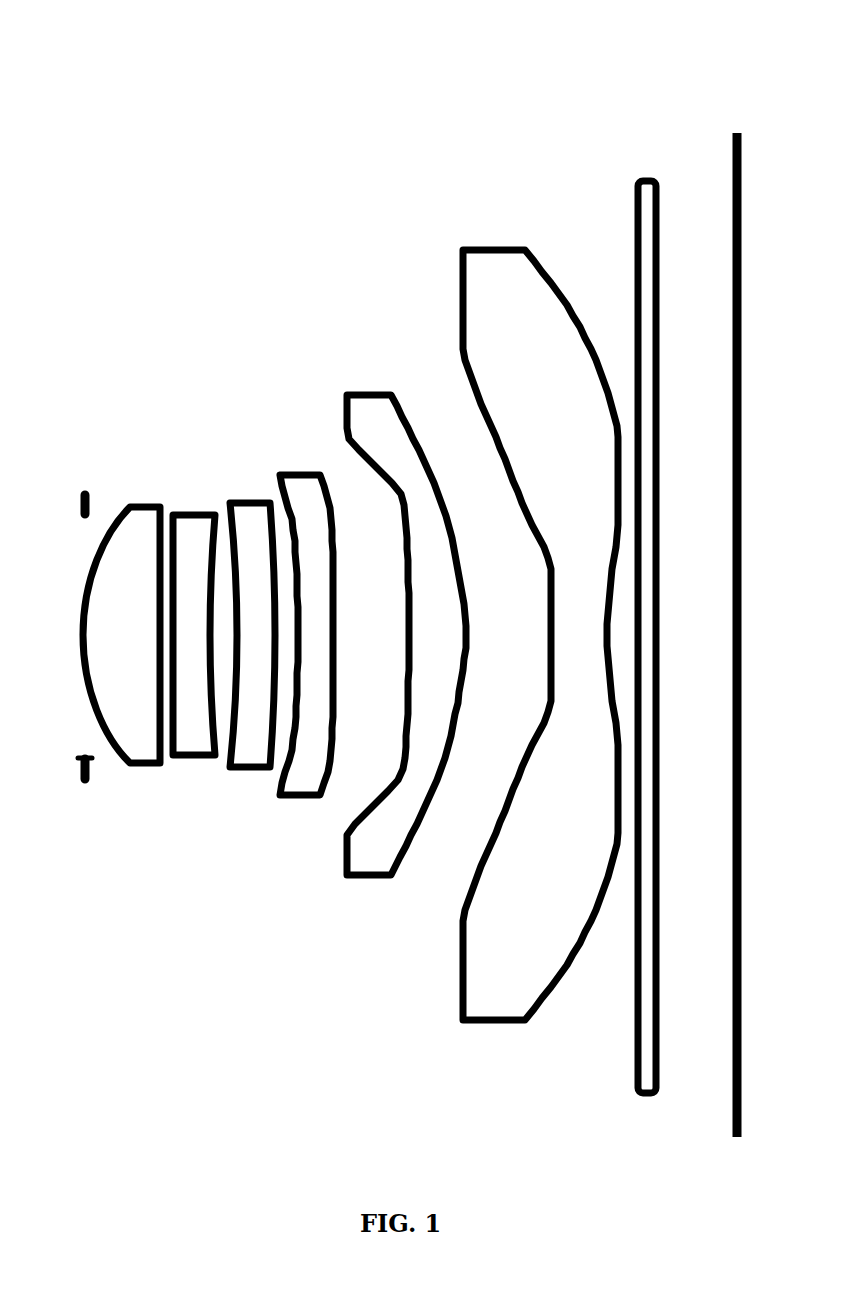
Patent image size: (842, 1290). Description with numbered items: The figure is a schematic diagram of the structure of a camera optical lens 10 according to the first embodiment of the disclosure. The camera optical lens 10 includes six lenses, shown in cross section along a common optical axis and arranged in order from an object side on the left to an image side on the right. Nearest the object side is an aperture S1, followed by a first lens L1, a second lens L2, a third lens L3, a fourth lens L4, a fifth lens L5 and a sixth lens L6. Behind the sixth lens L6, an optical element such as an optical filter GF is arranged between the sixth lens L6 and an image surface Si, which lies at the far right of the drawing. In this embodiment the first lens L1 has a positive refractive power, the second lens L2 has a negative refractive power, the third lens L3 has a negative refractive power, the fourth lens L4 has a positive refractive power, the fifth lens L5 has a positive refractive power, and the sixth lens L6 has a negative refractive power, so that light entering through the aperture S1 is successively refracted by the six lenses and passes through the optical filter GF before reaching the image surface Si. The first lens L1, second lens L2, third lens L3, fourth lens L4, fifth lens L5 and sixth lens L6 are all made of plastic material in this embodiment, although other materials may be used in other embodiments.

The camera optical lens 10 is at (415, 40).
The aperture S1 is at (87, 621).
The first lens L1 is at (121, 619).
The second lens L2 is at (194, 618).
The third lens L3 is at (252, 618).
The fourth lens L4 is at (306, 619).
The fifth lens L5 is at (406, 618).
The sixth lens L6 is at (540, 617).
The optical filter GF is at (648, 621).
The image surface Si is at (740, 622).